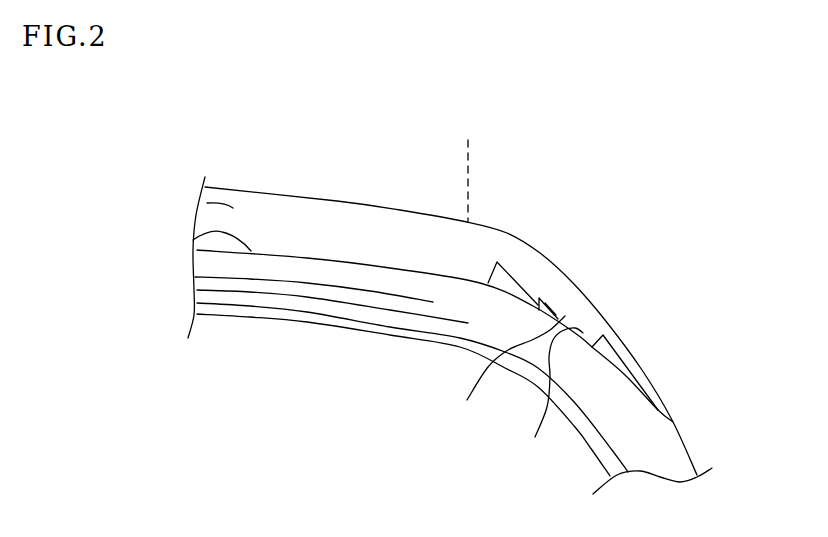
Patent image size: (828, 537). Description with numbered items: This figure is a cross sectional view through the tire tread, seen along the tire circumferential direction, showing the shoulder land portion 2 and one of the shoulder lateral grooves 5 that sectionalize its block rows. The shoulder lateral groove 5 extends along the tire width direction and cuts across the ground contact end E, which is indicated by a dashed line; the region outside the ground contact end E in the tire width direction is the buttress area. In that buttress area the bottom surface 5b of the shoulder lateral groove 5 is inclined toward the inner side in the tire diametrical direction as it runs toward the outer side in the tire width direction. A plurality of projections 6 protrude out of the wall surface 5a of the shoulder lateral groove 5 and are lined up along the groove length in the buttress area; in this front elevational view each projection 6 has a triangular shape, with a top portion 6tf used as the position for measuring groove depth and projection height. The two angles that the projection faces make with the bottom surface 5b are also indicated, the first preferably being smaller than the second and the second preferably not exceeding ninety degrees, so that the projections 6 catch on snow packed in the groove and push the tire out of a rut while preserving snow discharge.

The shoulder land portion 2 is at (258, 190).
The shoulder lateral groove 5 is at (325, 227).
The wall surface 5a is at (207, 203).
The bottom surface 5b is at (193, 240).
The ground contact end E is at (471, 164).
The projection 6 is at (508, 275).
The top portion 6tf is at (542, 295).